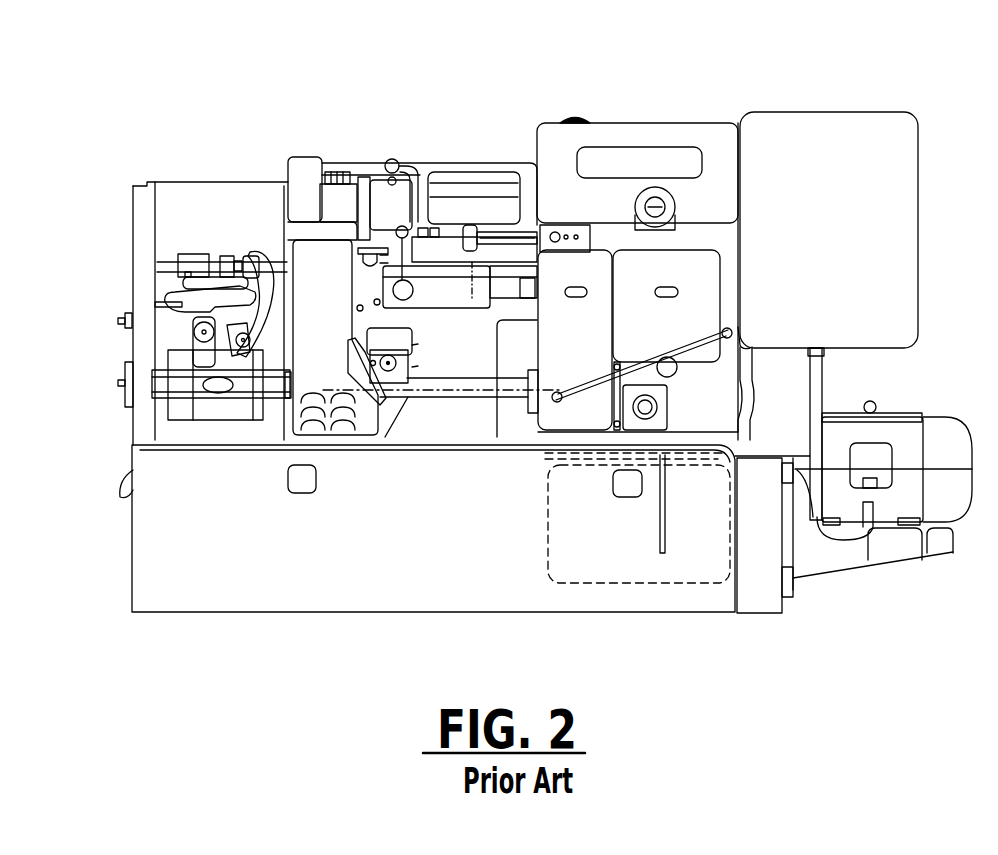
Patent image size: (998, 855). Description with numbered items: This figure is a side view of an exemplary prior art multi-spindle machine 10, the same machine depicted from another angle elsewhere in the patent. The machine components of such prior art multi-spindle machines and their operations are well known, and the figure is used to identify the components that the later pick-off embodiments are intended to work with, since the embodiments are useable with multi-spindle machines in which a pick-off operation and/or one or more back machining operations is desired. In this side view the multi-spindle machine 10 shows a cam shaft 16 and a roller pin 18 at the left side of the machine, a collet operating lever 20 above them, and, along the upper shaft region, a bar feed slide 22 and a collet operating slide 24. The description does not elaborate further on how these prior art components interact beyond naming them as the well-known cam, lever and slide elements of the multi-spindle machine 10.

The multi-spindle machine 10 is at (502, 102).
The cam shaft 16 is at (120, 383).
The roller pin 18 is at (125, 322).
The collet operating lever 20 is at (200, 340).
The bar feed slide 22 is at (197, 255).
The collet operating slide 24 is at (247, 262).